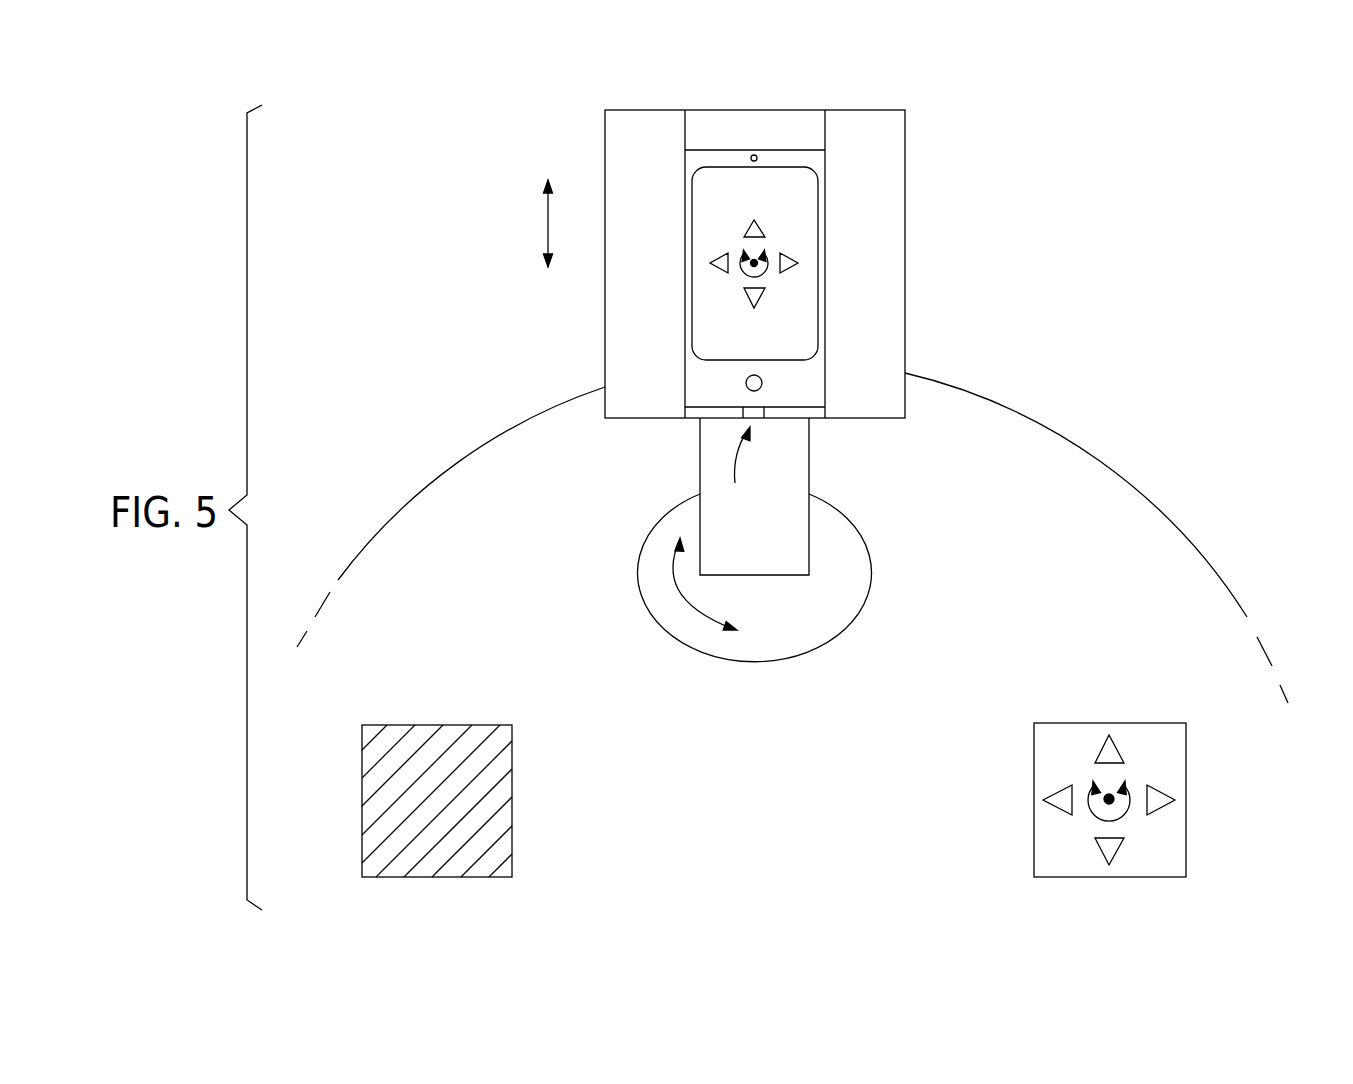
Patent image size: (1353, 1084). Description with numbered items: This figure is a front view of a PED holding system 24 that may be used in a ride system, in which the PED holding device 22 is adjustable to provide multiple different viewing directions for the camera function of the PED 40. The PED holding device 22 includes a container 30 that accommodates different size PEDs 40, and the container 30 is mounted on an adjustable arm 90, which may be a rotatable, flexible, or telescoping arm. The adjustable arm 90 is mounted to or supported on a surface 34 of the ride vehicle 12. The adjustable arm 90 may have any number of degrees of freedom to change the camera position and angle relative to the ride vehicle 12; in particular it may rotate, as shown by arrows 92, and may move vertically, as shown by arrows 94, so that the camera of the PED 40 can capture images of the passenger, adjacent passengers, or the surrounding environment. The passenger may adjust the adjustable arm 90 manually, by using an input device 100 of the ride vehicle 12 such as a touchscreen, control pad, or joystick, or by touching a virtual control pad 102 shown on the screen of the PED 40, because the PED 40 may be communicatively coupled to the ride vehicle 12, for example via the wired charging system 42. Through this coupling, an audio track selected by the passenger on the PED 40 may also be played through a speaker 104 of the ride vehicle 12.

The ride vehicle 12 is at (1143, 453).
The PED holding device 22 is at (972, 157).
The PED holding system 24 is at (985, 122).
The container 30 is at (953, 188).
The surface 34 is at (988, 427).
The PED 40 is at (720, 150).
The wired charging system 42 is at (735, 472).
The adjustable arm 90 is at (809, 445).
The arrows 92 is at (683, 603).
The arrows 94 is at (548, 225).
The input device 100 is at (1109, 723).
The virtual control pad 102 is at (785, 287).
The speaker 104 is at (437, 725).